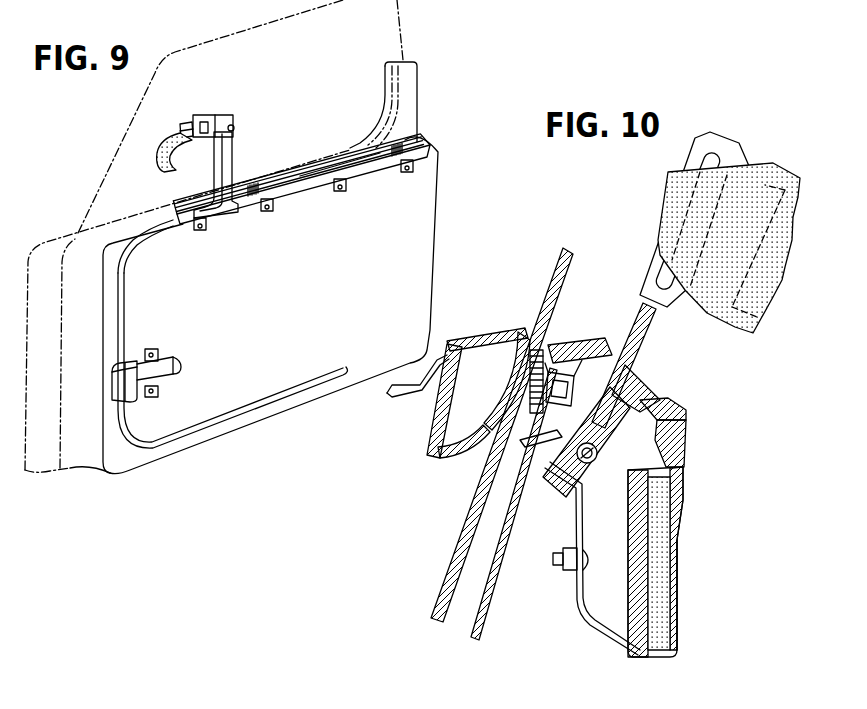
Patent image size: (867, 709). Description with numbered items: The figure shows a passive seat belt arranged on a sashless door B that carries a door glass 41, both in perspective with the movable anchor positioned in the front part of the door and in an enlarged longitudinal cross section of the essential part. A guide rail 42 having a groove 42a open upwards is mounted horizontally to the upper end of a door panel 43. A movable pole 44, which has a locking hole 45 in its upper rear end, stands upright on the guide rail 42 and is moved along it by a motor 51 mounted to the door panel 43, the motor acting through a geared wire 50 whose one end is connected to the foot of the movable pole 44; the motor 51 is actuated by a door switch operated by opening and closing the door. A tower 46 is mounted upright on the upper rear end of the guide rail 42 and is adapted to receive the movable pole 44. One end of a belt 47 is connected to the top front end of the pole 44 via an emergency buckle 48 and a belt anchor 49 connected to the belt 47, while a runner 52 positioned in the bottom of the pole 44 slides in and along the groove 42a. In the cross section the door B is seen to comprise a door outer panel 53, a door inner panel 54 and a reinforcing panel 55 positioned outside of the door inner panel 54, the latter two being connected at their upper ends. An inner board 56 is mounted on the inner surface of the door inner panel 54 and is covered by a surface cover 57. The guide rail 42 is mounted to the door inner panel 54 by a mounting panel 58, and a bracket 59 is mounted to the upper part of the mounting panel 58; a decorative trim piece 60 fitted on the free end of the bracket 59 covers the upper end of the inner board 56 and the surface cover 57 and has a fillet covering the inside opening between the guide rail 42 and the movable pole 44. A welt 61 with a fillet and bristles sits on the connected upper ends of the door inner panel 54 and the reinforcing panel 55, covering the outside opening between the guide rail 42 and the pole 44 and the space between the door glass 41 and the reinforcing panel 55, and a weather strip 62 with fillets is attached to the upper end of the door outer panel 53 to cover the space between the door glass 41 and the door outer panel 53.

In FIG. 9, the door glass 41 is at (403, 34).
In FIG. 10, the door glass 41 is at (452, 553).
In FIG. 9, the guide rail 42 is at (302, 197).
In FIG. 10, the guide rail 42 is at (684, 474).
In FIG. 9, the groove 42a is at (307, 180).
In FIG. 9, the door panel 43 is at (424, 194).
In FIG. 9, the movable pole 44 is at (229, 163).
In FIG. 10, the movable pole 44 is at (653, 322).
In FIG. 9, the locking hole 45 is at (234, 128).
In FIG. 9, the tower 46 is at (417, 62).
In FIG. 9, the belt 47 is at (161, 167).
In FIG. 10, the belt 47 is at (738, 333).
In FIG. 9, the emergency buckle 48 is at (206, 115).
In FIG. 10, the emergency buckle 48 is at (662, 232).
In FIG. 9, the belt anchor 49 is at (186, 119).
In FIG. 9, the geared wire 50 is at (132, 283).
In FIG. 10, the geared wire 50 is at (566, 484).
In FIG. 9, the motor 51 is at (165, 357).
In FIG. 10, the runner 52 is at (640, 396).
In FIG. 10, the door outer panel 53 is at (407, 393).
In FIG. 10, the door inner panel 54 is at (592, 626).
In FIG. 10, the reinforcing panel 55 is at (490, 590).
In FIG. 10, the inner board 56 is at (677, 568).
In FIG. 10, the surface cover 57 is at (678, 605).
In FIG. 10, the mounting panel 58 is at (585, 506).
In FIG. 10, the bracket 59 is at (684, 440).
In FIG. 10, the decorative trim piece 60 is at (686, 410).
In FIG. 10, the welt 61 is at (578, 360).
In FIG. 10, the weather strip 62 is at (505, 344).
In FIG. 9, the sashless door B is at (437, 218).